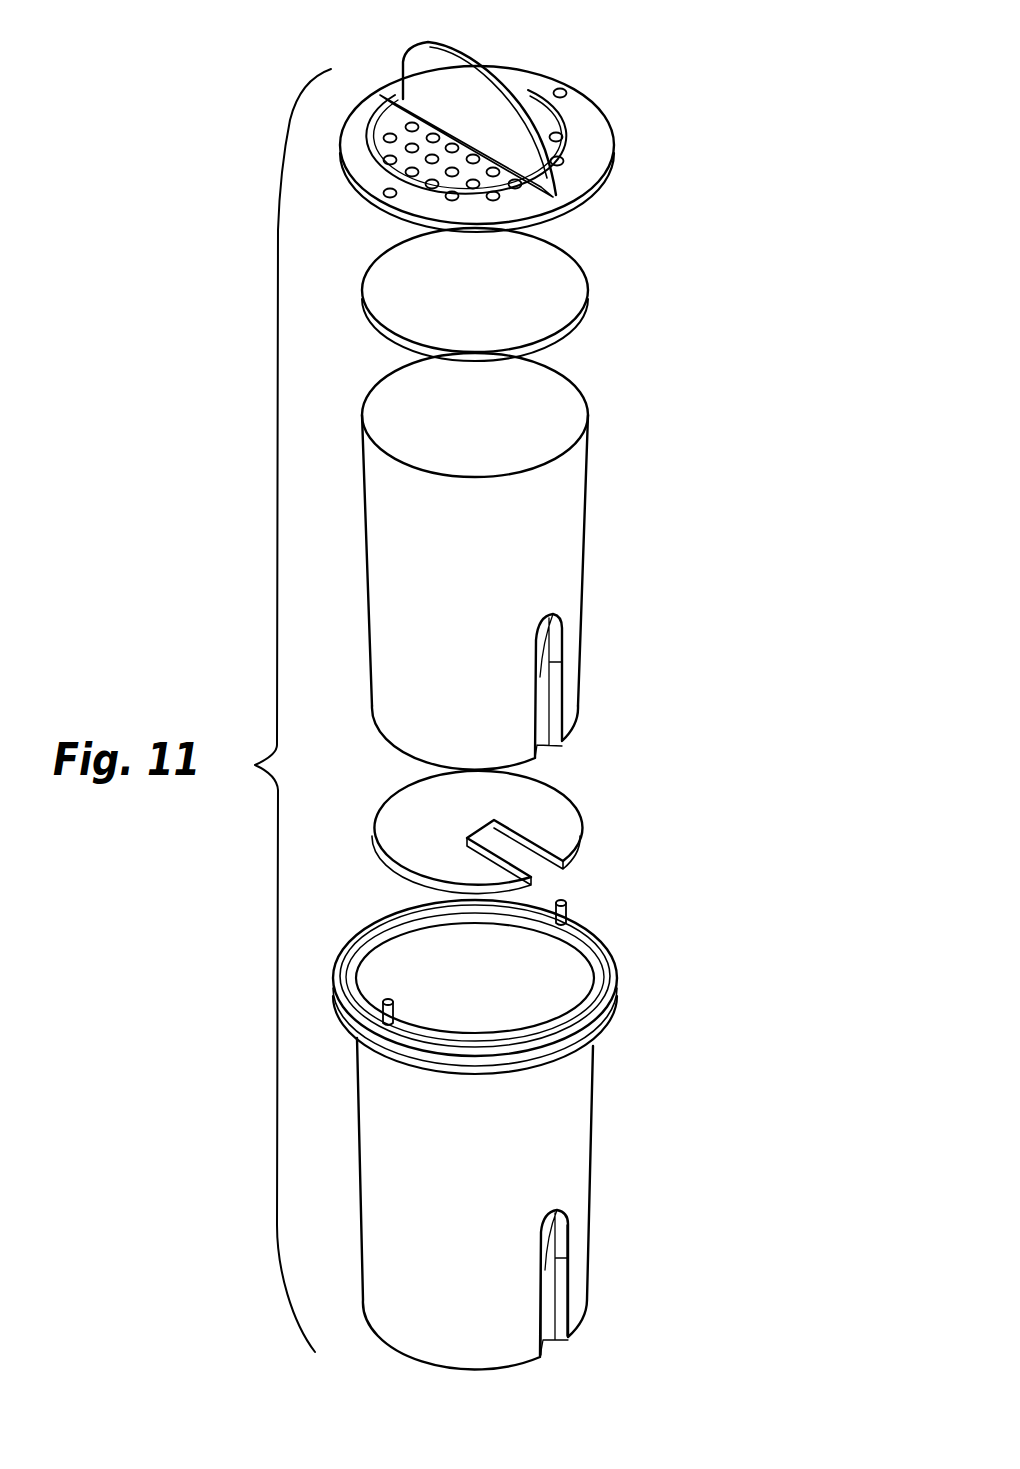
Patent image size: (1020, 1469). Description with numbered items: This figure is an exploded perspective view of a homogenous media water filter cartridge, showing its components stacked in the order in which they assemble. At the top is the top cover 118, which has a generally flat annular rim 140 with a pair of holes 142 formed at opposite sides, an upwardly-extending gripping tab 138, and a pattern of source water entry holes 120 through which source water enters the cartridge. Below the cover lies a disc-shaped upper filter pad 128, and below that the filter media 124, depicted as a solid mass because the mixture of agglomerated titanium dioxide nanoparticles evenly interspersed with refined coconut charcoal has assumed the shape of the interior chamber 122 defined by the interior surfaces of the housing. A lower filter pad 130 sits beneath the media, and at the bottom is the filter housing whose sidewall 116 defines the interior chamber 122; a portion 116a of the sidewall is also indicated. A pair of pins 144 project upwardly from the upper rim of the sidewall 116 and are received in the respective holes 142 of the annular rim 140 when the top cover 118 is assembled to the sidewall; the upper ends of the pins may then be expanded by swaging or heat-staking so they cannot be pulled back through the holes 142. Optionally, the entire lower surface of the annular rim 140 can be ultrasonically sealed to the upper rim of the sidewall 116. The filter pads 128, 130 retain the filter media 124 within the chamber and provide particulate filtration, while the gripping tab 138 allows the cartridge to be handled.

The filter housing sidewall 116 is at (596, 1102).
The slot in cup body 116a is at (546, 1344).
The top cover 118 is at (496, 116).
The source water entry holes 120 is at (474, 158).
The interior chamber 122 is at (516, 1113).
The filter media 124 is at (593, 405).
The upper filter pad 128 is at (583, 277).
The lower filter pad 130 is at (555, 803).
The gripping tab 138 is at (430, 44).
The annular rim 140 is at (598, 142).
The holes 142 is at (560, 91).
The pins 144 is at (570, 912).